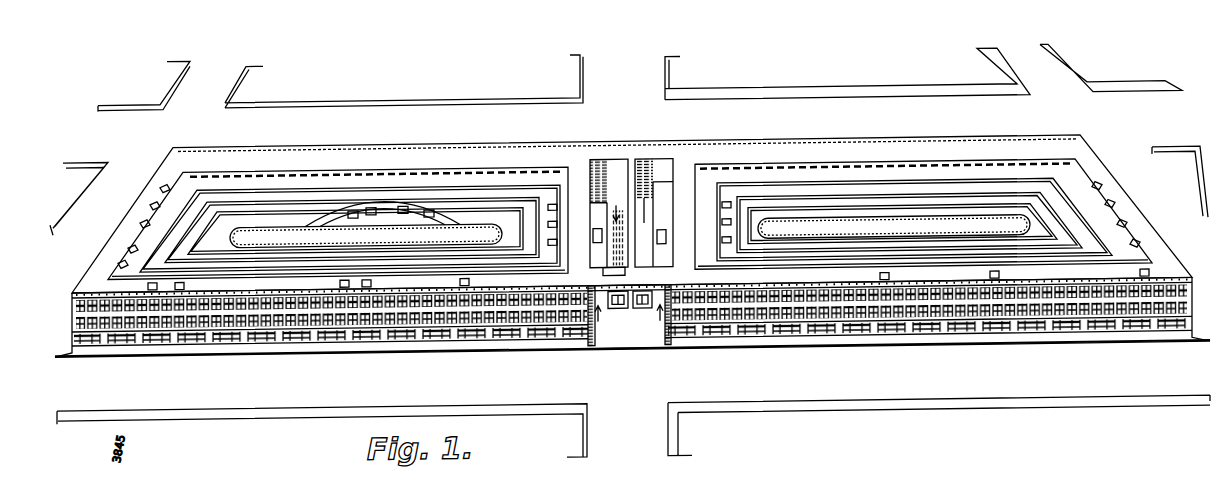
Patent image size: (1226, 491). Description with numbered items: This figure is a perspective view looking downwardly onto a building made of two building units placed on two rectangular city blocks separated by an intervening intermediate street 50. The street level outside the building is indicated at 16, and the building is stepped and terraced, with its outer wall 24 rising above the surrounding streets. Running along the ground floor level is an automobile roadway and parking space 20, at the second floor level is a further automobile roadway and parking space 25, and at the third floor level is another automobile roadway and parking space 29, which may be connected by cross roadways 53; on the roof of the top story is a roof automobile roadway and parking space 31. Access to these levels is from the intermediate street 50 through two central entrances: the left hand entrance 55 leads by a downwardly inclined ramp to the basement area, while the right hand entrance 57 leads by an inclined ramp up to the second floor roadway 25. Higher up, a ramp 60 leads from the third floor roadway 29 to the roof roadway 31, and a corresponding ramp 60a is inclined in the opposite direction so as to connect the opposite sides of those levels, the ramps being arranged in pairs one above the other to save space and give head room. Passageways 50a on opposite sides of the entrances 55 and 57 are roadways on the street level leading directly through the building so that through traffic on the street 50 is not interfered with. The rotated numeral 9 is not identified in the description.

The street level 16 is at (630, 253).
The automobile roadway and parking space 20 is at (280, 217).
The outer wall 24 is at (1180, 307).
The automobile roadway and parking space 25 is at (467, 202).
The automobile roadway and parking space 29 is at (480, 184).
The roof automobile roadway and parking space 31 is at (444, 150).
The intermediate street 50 is at (623, 97).
The passageways 50a is at (600, 331).
The cross roadways 53 is at (623, 226).
The left hand entrance 55 is at (618, 312).
The right hand entrance 57 is at (645, 312).
The ramp 60 is at (653, 213).
The ramp 60a is at (618, 189).
The ramp lane 9 is at (643, 191).